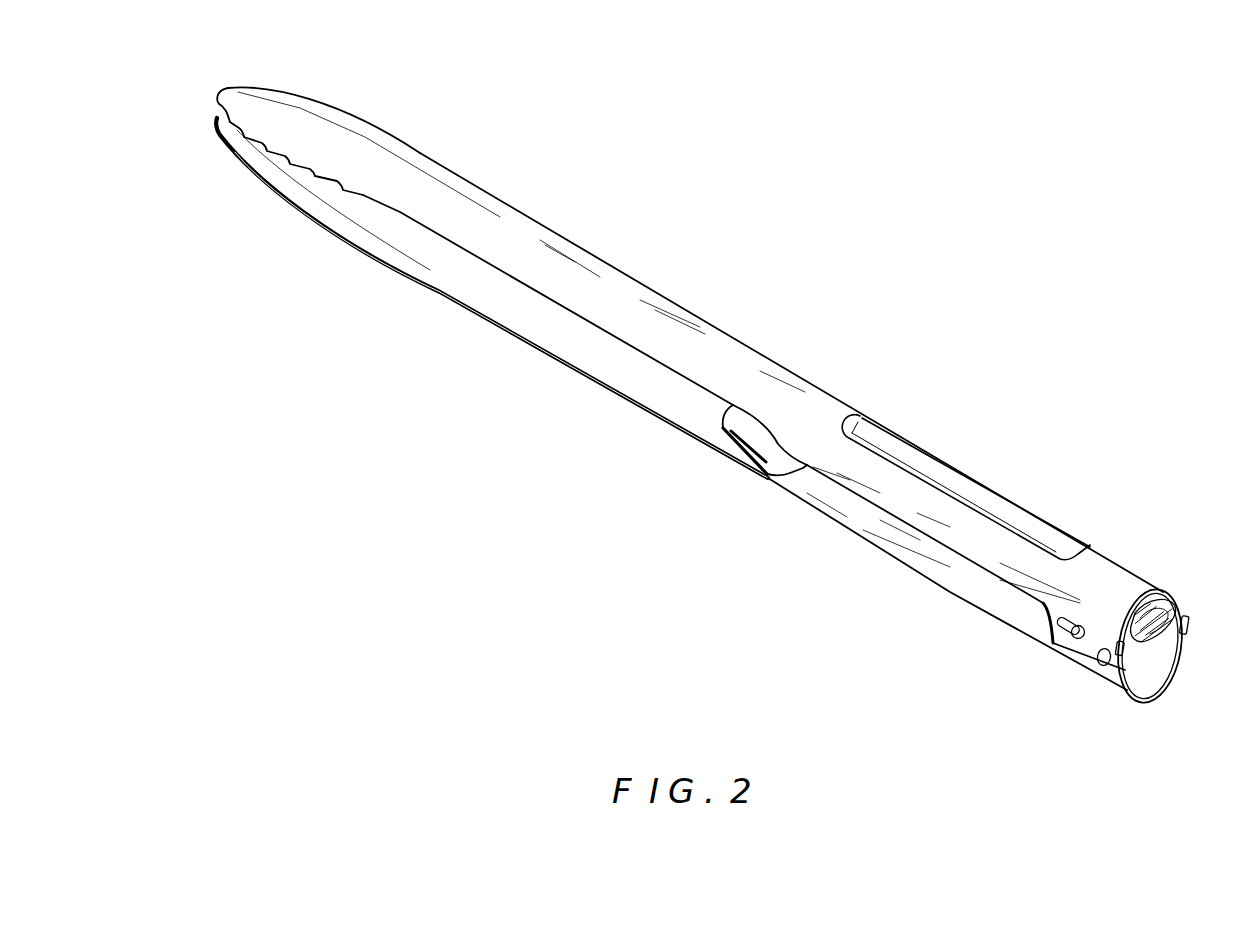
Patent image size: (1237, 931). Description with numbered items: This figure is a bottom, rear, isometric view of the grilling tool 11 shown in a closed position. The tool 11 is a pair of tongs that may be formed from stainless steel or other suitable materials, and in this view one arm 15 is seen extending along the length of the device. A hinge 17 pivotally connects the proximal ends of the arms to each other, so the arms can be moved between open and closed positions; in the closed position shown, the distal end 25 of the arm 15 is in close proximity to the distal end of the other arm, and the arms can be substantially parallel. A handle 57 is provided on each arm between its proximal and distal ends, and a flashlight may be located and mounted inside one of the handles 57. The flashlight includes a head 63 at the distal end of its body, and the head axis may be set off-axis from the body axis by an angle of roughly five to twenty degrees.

The tool 11 is at (986, 171).
The arm 15 is at (607, 282).
The hinge 17 is at (1108, 565).
The distal end 25 is at (293, 123).
The handle 57 is at (933, 472).
The head 63 is at (752, 437).